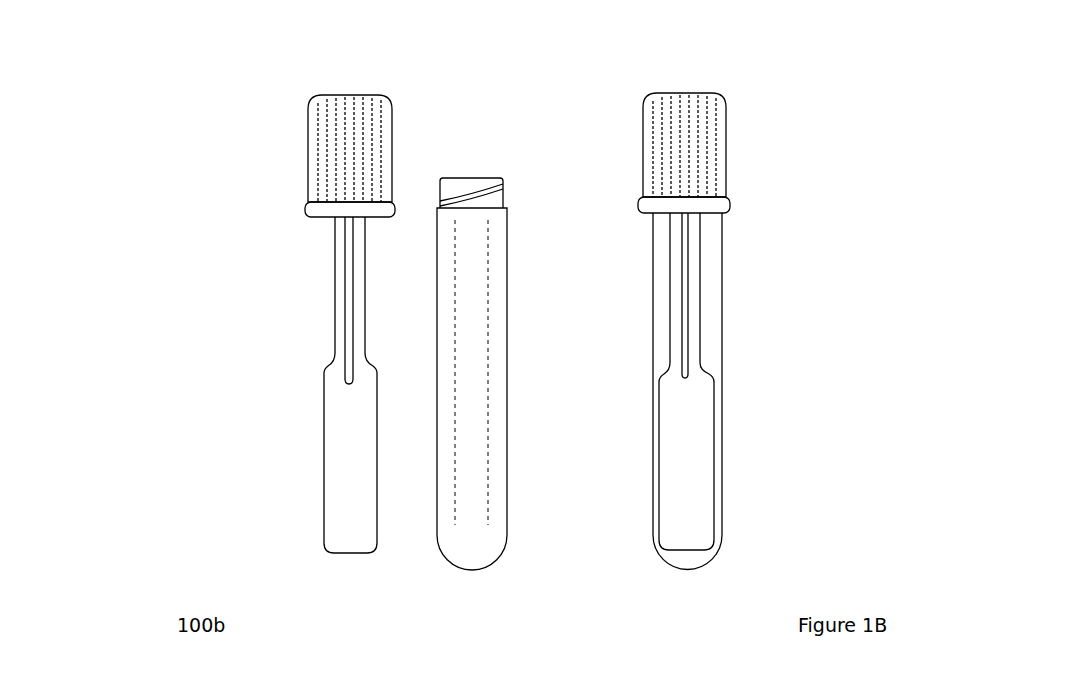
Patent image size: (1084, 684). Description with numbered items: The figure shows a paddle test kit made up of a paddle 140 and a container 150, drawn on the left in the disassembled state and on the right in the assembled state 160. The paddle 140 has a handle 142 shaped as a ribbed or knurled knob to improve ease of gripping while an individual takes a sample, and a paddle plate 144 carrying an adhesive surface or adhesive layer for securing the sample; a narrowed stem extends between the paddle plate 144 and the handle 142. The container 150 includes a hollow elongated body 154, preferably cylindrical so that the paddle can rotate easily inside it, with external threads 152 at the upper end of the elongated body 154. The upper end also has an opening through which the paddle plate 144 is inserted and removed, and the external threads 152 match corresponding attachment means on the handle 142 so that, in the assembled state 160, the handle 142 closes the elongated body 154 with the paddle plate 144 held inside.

The paddle 140 is at (226, 202).
The handle 142 is at (320, 117).
The paddle plate 144 is at (335, 421).
The container 150 is at (524, 144).
The external threads 152 is at (480, 205).
The elongated body 154 is at (475, 389).
The assembled state 160 is at (803, 262).